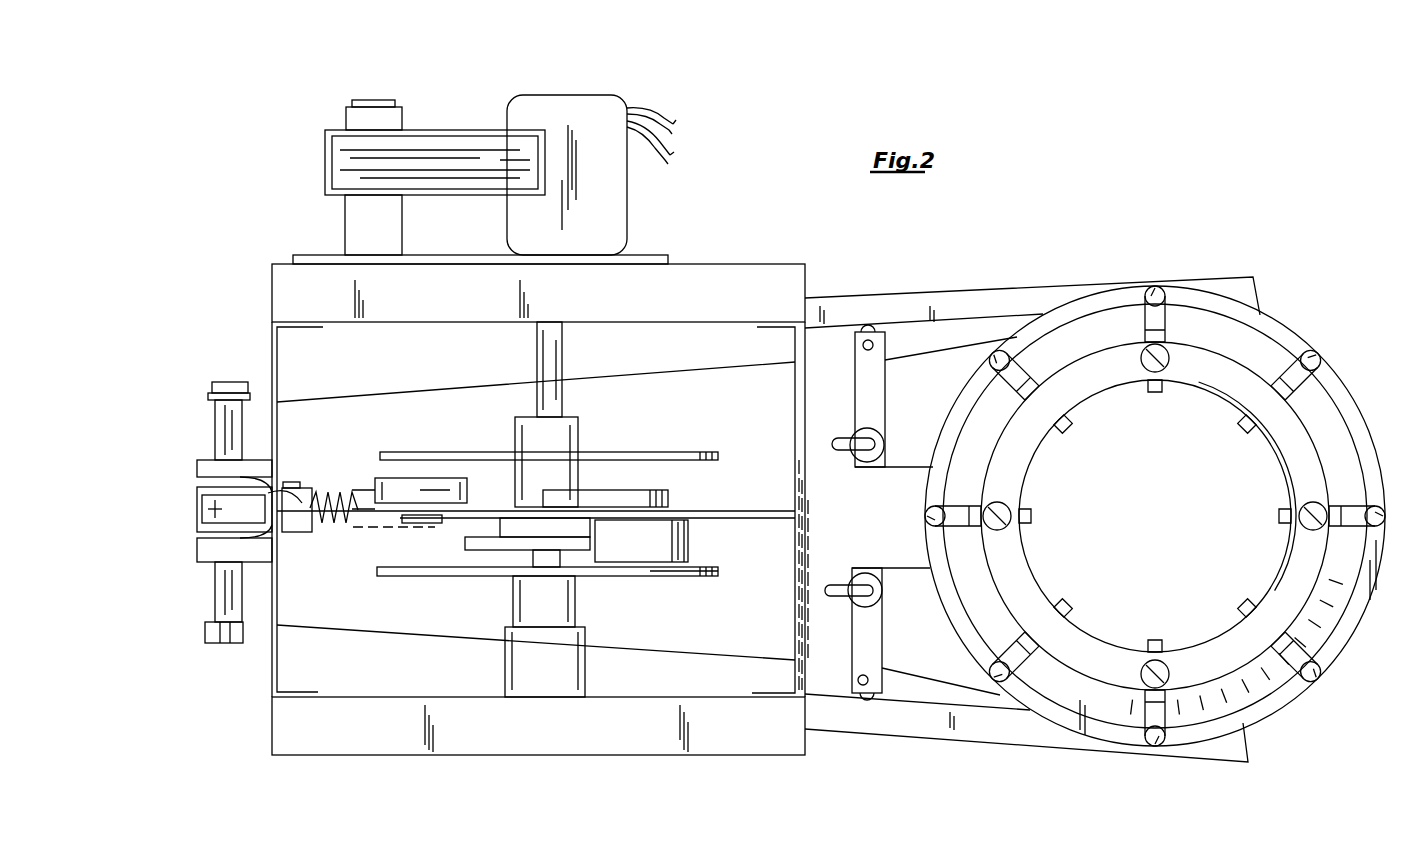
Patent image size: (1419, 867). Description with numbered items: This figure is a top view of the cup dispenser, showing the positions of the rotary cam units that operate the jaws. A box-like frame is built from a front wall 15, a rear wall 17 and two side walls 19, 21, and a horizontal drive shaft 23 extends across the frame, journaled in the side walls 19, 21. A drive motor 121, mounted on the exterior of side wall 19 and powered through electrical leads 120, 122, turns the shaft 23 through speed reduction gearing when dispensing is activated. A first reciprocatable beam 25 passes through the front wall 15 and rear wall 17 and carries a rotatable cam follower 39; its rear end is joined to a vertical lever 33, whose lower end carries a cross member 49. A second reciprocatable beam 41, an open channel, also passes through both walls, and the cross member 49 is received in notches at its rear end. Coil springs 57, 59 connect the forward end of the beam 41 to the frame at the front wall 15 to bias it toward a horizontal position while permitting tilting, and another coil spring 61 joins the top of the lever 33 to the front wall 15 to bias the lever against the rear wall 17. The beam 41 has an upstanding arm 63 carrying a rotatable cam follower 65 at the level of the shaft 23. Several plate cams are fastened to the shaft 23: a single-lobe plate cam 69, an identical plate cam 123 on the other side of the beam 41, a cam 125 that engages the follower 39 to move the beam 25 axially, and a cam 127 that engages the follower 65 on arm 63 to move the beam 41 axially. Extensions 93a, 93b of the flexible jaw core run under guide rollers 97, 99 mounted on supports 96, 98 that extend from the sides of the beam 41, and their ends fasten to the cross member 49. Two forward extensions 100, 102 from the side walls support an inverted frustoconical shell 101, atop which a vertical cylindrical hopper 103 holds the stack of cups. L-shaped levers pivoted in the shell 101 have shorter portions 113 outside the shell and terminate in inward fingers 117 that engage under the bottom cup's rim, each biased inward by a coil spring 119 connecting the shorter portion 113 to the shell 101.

The front wall 15 is at (797, 394).
The rear wall 17 is at (272, 352).
The side wall 19 is at (283, 262).
The side wall 21 is at (300, 757).
The horizontal drive shaft 23 is at (557, 360).
The first reciprocatable beam 25 is at (756, 511).
The vertical lever 33 is at (200, 522).
The rotatable cam follower 39 is at (385, 478).
The second reciprocatable beam 41 is at (733, 577).
The cross member 49 is at (214, 590).
The coil spring 57 is at (880, 436).
The coil spring 59 is at (880, 591).
The coil spring 61 is at (335, 532).
The upstanding arm 63 is at (662, 522).
The rotatable cam follower 65 is at (682, 540).
The plate cam 69 is at (393, 576).
The core extension 93a is at (920, 680).
The core extension 93b is at (942, 352).
The support 96 is at (883, 642).
The guide roller 97 is at (864, 700).
The support 98 is at (886, 343).
The guide roller 99 is at (869, 328).
The forward extension 100 is at (927, 742).
The inverted frustoconical shell 101 is at (1300, 486).
The forward extension 102 is at (1022, 290).
The vertical cylindrical hopper 103 is at (1275, 452).
The shorter portion 113 is at (1290, 682).
The finger 117 is at (1282, 521).
The coil spring 119 is at (1322, 682).
The electrical lead 120 is at (658, 112).
The drive motor 121 is at (560, 95).
The electrical lead 122 is at (672, 140).
The plate cam 123 is at (418, 452).
The cam 125 is at (585, 490).
The cam 127 is at (478, 550).